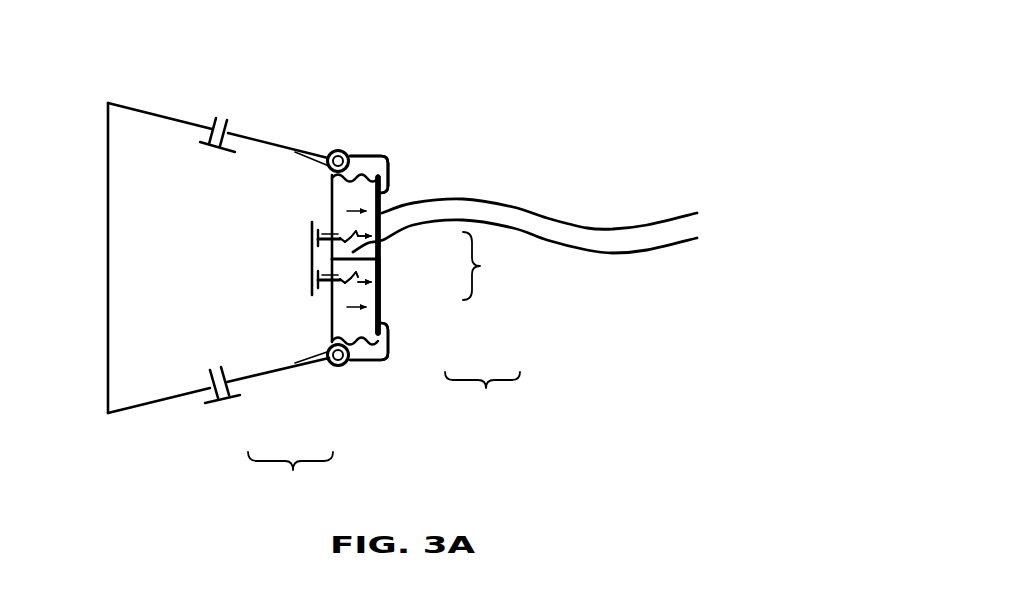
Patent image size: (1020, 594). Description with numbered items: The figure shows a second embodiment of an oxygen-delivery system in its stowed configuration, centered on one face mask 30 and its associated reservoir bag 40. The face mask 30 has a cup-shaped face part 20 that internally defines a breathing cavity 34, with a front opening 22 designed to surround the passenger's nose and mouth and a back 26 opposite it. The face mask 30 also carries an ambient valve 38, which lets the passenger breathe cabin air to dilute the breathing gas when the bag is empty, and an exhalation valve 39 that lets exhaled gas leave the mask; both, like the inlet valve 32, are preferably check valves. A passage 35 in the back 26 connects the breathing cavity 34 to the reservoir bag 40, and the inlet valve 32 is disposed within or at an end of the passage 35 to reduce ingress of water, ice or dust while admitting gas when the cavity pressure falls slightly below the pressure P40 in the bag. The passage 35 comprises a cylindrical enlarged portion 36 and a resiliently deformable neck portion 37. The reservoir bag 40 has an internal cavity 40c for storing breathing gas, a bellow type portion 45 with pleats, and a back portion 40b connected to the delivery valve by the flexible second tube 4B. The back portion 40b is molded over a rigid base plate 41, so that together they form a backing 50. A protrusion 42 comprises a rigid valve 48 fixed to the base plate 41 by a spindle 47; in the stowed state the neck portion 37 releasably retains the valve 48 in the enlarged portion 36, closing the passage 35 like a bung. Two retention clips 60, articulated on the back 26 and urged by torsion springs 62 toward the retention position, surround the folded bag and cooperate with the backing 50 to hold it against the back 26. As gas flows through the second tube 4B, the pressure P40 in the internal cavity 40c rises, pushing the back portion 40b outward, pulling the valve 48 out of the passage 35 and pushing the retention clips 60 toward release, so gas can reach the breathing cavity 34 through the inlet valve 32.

The face part 20 is at (138, 109).
The front opening 22 is at (107, 360).
The back 26 is at (331, 222).
The face mask 30 is at (128, 440).
The inlet valve 32 is at (308, 252).
The breathing cavity 34 is at (142, 210).
The passage 35 is at (290, 477).
The enlarged portion 36 is at (323, 284).
The neck portion 37 is at (351, 282).
The ambient valve 38 is at (203, 143).
The exhalation valve 39 is at (220, 400).
The reservoir bag 40 is at (365, 362).
The back portion 40b is at (402, 292).
The internal cavity 40c is at (378, 163).
The base plate 41 is at (382, 305).
The protrusion 42 is at (489, 266).
The bellow type portion 45 is at (358, 173).
The spindle 47 is at (380, 245).
The rigid valve 48 is at (332, 264).
The backing 50 is at (449, 295).
The retention clip 60 is at (392, 150).
The spring 62 is at (336, 150).
The pressure in the reservoir bag P40 is at (385, 209).
The second tube 4B is at (590, 227).